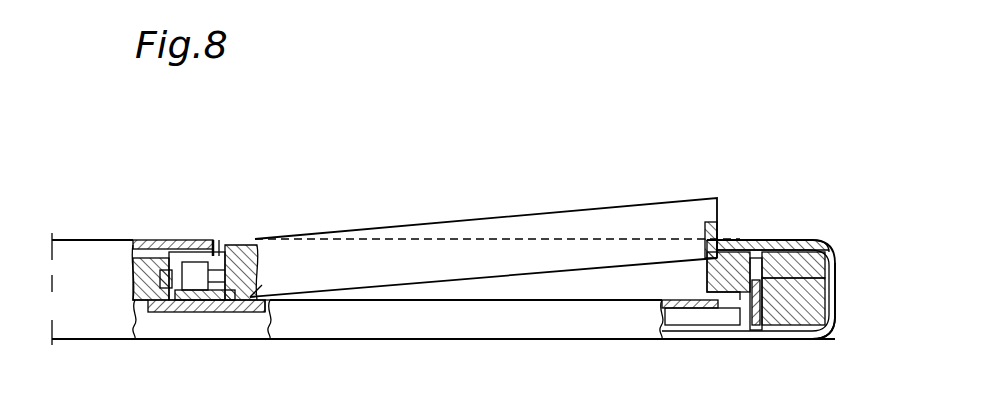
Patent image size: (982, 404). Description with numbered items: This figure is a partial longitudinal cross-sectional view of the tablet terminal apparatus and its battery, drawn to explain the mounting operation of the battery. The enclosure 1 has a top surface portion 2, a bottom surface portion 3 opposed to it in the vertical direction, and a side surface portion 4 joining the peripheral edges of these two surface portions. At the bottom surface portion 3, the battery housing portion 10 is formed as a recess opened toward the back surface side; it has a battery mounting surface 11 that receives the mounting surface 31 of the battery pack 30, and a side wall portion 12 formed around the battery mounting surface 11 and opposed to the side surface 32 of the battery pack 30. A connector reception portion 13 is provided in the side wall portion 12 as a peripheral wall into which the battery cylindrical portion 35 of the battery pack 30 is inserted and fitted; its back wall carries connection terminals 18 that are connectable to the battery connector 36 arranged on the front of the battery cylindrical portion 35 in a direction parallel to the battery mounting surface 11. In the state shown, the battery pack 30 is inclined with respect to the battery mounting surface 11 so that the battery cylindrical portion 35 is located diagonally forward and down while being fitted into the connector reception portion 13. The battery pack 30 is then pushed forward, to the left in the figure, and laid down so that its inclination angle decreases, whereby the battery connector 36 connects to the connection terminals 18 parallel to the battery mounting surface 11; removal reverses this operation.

The enclosure 1 is at (750, 233).
The top surface portion 2 is at (108, 340).
The bottom surface portion 3 is at (120, 240).
The side surface portion 4 is at (832, 293).
The battery housing portion 10 is at (562, 282).
The battery mounting surface 11 is at (455, 298).
The side wall portion 12 is at (508, 285).
The connector reception portion 13 is at (228, 245).
The connection terminals 18 is at (198, 312).
The battery pack 30 is at (515, 213).
The mounting surface 31 is at (530, 275).
The side surface 32 is at (663, 218).
The battery cylindrical portion 35 is at (210, 242).
The battery connector 36 is at (257, 245).